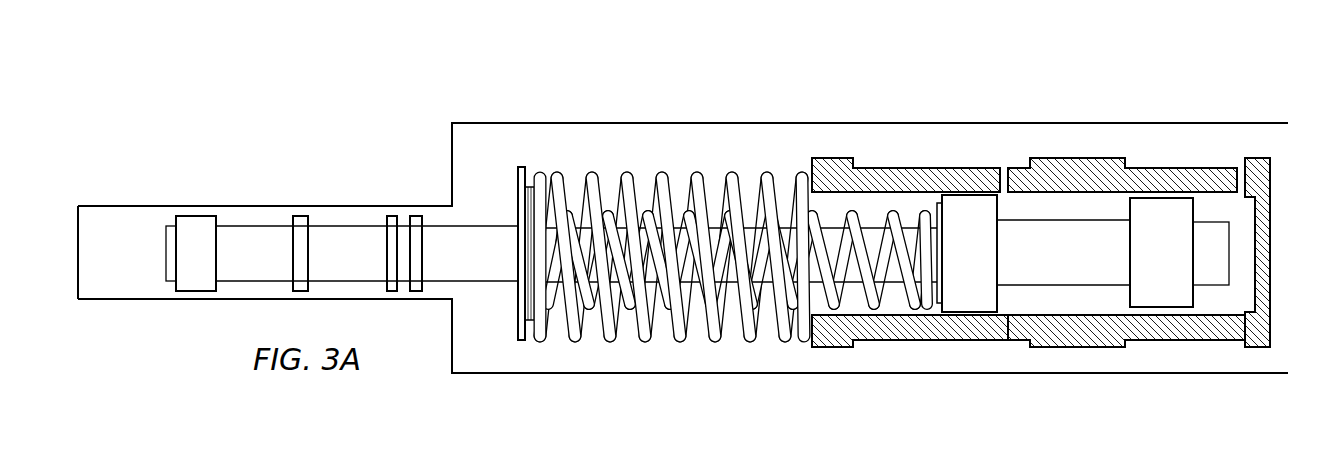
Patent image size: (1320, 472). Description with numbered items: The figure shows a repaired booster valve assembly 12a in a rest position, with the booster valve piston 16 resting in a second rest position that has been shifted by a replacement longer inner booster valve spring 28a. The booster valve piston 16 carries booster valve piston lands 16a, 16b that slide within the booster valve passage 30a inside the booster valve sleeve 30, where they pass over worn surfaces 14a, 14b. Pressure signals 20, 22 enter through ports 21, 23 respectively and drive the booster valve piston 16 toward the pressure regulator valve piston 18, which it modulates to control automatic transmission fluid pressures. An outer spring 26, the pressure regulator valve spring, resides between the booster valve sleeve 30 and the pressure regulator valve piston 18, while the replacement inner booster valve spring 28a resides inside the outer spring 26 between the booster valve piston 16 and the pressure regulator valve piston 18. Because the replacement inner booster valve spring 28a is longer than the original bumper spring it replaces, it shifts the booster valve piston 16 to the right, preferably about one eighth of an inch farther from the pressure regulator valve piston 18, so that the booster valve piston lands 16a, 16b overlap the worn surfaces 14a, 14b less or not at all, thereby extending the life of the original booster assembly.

The repaired booster valve assembly 12a is at (483, 146).
The pressure regulator valve piston 18 is at (342, 253).
The outer spring 26 is at (625, 175).
The replacement inner booster valve spring 28a is at (716, 222).
The worn surface 14a is at (881, 332).
The worn surface 14b is at (1068, 322).
The booster valve sleeve 30 is at (1087, 180).
The pressure signal 20 is at (1003, 152).
The pressure signal 22 is at (1241, 152).
The port 23 is at (1272, 222).
The port 21 is at (1008, 198).
The booster valve passage 30a is at (1058, 194).
The booster valve piston 16 is at (1113, 252).
The booster valve piston land 16a is at (969, 253).
The booster valve piston land 16b is at (1161, 252).